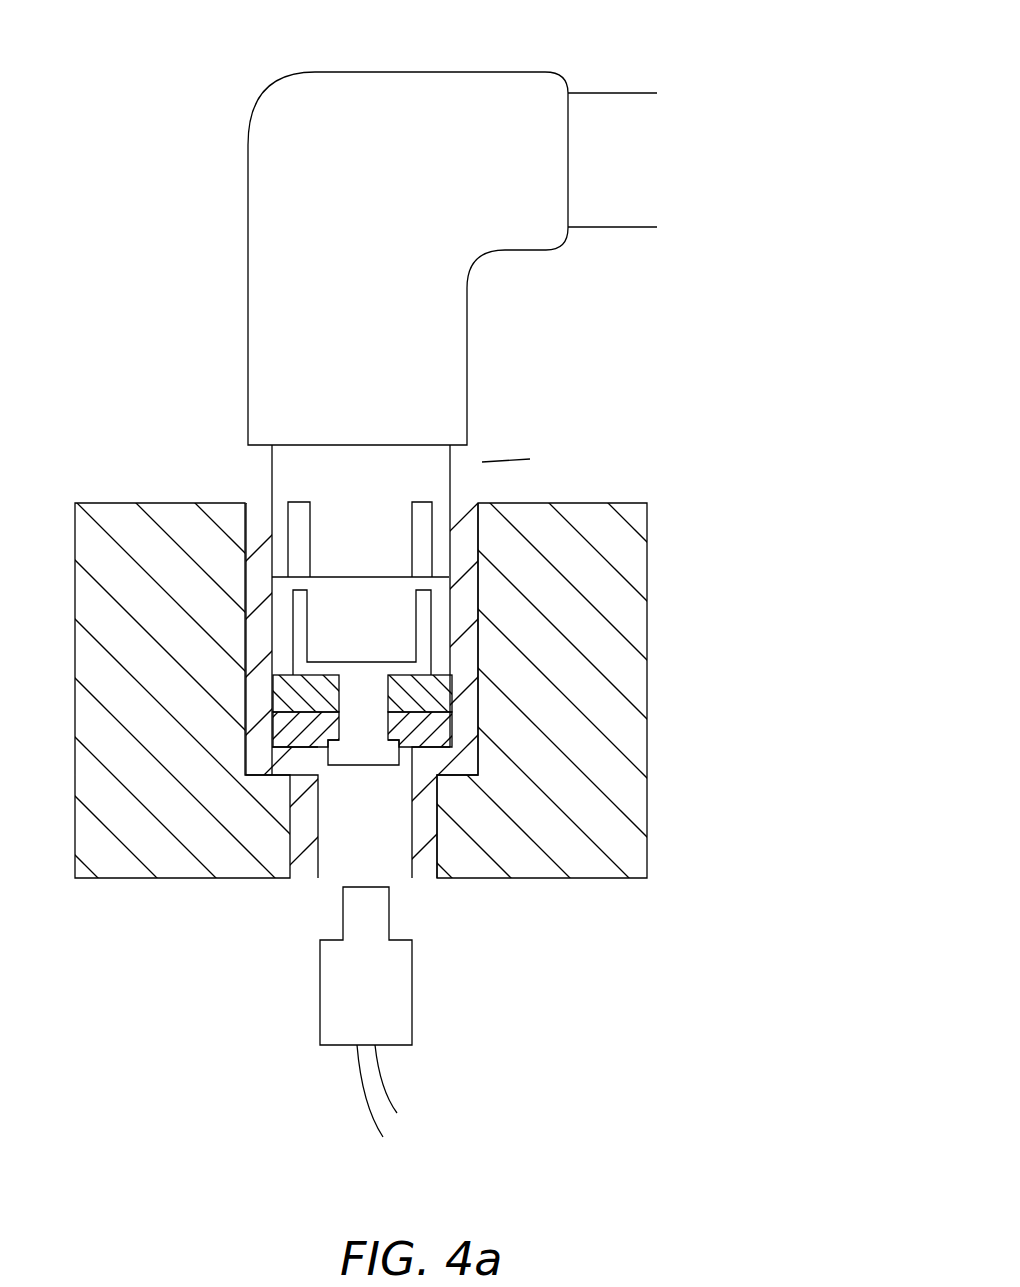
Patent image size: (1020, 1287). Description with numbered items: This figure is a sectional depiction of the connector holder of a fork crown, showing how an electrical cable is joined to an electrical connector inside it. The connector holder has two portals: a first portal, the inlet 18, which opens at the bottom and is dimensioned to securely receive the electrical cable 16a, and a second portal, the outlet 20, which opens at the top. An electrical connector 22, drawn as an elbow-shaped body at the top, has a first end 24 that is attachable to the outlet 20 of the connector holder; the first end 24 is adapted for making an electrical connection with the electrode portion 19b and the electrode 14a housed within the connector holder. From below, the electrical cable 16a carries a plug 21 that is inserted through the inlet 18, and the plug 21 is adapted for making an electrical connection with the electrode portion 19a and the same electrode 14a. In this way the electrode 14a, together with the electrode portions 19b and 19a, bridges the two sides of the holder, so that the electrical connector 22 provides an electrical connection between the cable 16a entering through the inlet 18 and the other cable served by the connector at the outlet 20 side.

The electrical connector 22 is at (272, 93).
The first end 24 is at (482, 462).
The outlet 20 is at (450, 500).
The electrode portion 19b is at (359, 677).
The electrode 14a is at (447, 793).
The electrode portion 19a is at (365, 780).
The inlet 18 is at (385, 842).
The plug 21 is at (322, 987).
The electrical cable 16a is at (387, 1092).